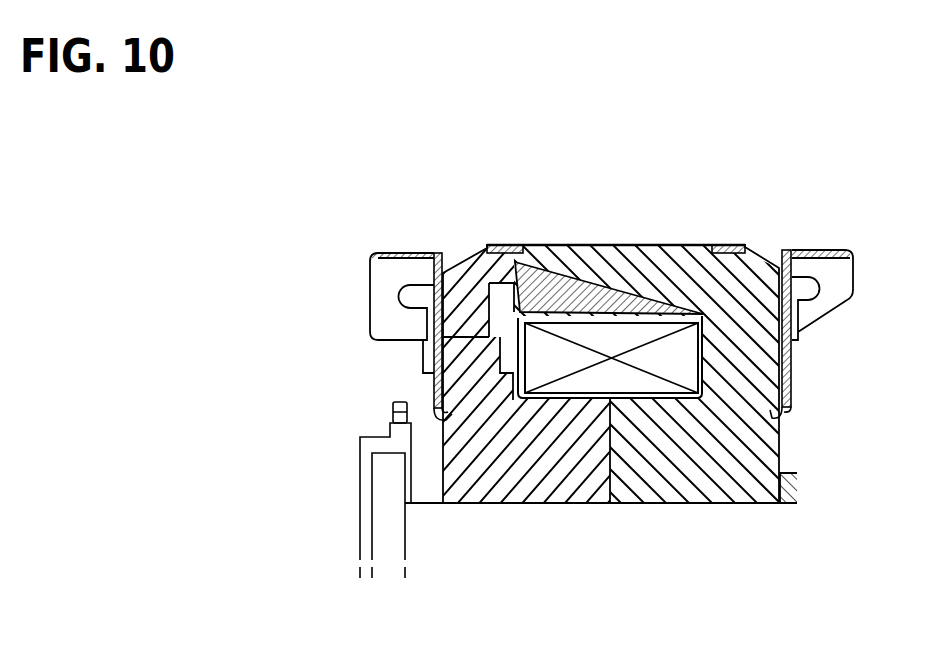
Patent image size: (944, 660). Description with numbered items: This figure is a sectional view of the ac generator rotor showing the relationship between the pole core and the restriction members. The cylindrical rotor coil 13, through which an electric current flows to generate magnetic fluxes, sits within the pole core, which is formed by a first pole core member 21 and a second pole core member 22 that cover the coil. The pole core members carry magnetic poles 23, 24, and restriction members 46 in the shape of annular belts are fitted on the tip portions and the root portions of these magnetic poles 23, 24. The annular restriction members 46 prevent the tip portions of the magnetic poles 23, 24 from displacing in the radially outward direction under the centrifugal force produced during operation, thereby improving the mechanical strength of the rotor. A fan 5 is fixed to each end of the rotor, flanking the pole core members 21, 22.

The fan 5 is at (383, 315).
The rotor coil 13 is at (575, 377).
The first pole core member 21 is at (720, 480).
The second pole core member 22 is at (478, 488).
The magnetic pole 23 is at (637, 265).
The magnetic pole 24 is at (530, 272).
The restriction member 46 is at (512, 245).